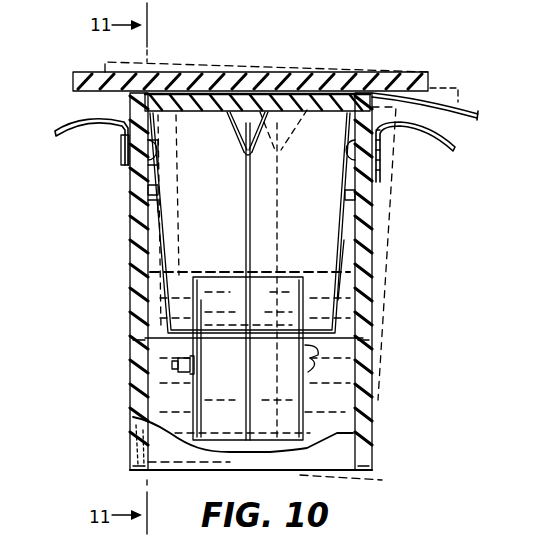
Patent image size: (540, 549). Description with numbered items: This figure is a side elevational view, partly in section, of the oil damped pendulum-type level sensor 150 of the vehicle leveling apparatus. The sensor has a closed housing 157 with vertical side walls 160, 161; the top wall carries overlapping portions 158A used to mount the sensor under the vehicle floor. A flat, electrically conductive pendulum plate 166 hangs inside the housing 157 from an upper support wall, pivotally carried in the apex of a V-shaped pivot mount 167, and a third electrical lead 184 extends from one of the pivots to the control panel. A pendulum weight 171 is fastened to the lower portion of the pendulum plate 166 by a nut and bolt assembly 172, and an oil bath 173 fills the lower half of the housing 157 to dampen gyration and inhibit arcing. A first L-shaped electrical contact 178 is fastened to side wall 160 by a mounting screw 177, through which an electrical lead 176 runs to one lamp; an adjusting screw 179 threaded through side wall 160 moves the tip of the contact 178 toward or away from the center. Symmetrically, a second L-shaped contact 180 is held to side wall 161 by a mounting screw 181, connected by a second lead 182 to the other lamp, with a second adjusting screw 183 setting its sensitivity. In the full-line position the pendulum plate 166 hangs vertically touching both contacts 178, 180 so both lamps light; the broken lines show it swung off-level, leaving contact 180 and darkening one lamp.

The level sensor 150 is at (398, 41).
The overlapping portions 158A is at (406, 82).
The closed housing 157 is at (130, 297).
The vertical side wall 161 is at (137, 348).
The vertical side wall 160 is at (368, 355).
The second L-shaped contact 180 is at (157, 263).
The first L-shaped electrical contact 178 is at (345, 239).
The adjusting screw 179 is at (372, 202).
The pendulum plate 166 is at (263, 176).
The mounting screw 177 is at (347, 150).
The second lead 182 is at (70, 122).
The third electrical lead 184 is at (467, 116).
The electrical lead 176 is at (430, 138).
The mounting screw 181 is at (238, 127).
The V-shaped pivot mount 167 is at (142, 188).
The second adjusting screw 183 is at (137, 208).
The oil bath 173 is at (340, 398).
The nut and bolt assembly 172 is at (148, 383).
The pendulum weight 171 is at (207, 398).